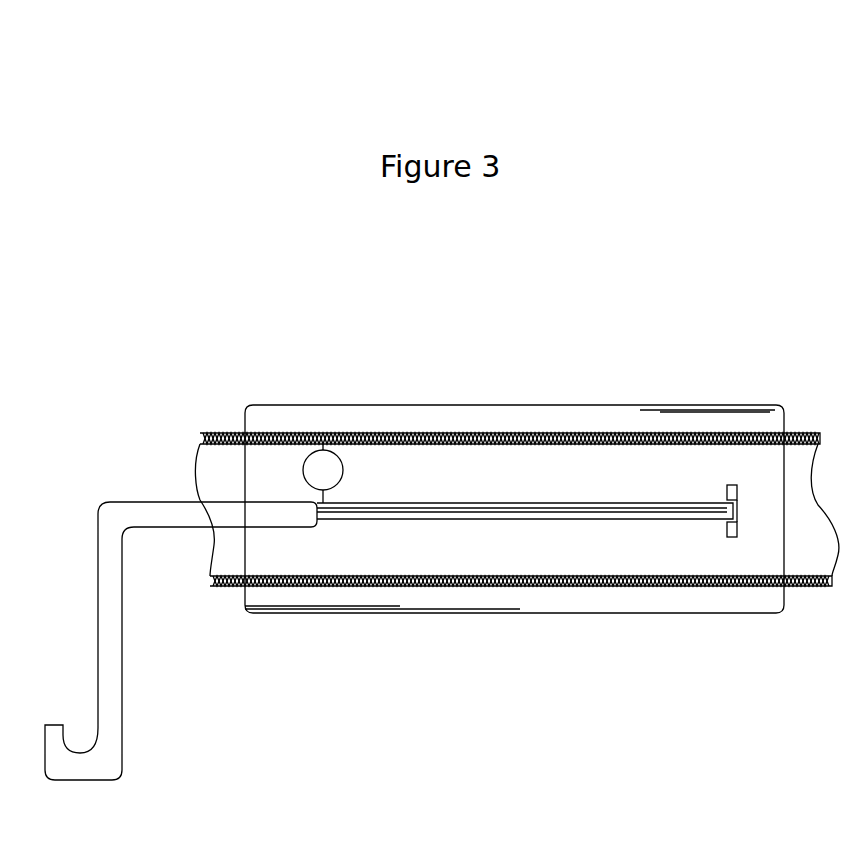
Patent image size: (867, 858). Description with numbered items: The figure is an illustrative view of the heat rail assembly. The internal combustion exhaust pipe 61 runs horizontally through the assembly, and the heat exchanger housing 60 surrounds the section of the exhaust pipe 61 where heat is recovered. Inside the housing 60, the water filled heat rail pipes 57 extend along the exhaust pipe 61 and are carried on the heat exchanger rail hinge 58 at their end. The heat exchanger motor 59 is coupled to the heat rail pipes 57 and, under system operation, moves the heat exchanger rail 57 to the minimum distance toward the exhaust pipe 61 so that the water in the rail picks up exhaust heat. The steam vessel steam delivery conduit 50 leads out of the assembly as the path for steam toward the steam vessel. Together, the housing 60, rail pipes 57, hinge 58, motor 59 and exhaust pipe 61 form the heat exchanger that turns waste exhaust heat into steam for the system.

The steam vessel steam delivery conduit 50 is at (124, 501).
The water filled heat rail pipes 57 is at (511, 522).
The heat exchanger rail hinge 58 is at (727, 530).
The heat exchanger motor 59 is at (343, 468).
The heat exchanger housing 60 is at (657, 615).
The internal combustion exhaust pipe 61 is at (633, 446).